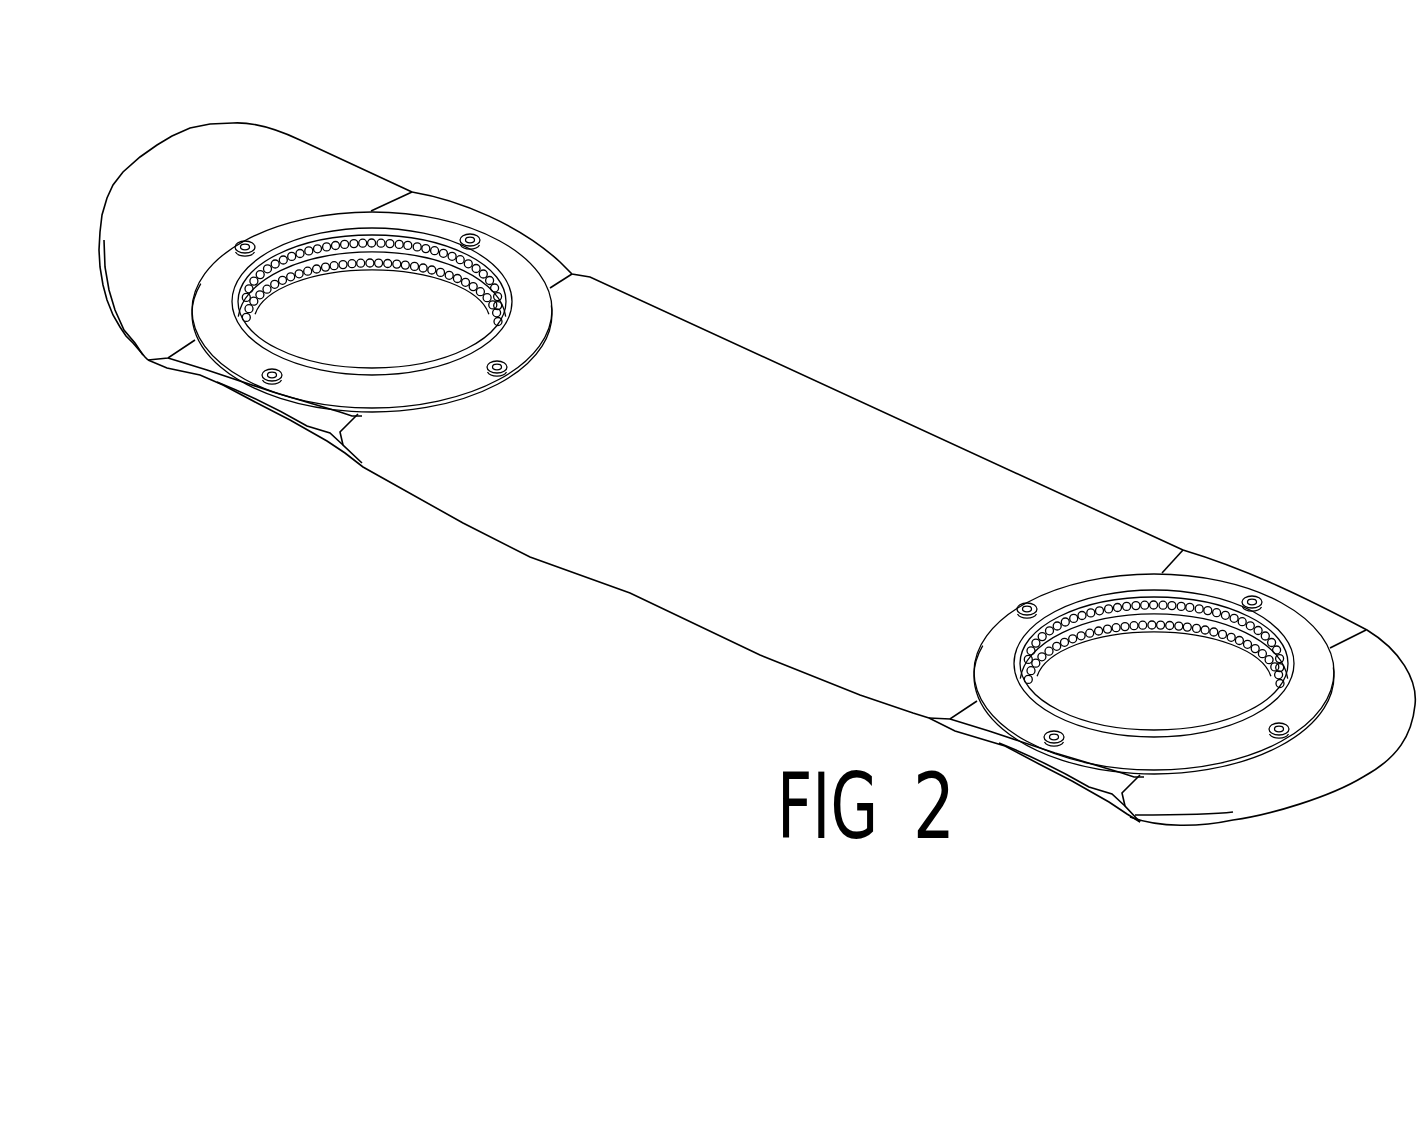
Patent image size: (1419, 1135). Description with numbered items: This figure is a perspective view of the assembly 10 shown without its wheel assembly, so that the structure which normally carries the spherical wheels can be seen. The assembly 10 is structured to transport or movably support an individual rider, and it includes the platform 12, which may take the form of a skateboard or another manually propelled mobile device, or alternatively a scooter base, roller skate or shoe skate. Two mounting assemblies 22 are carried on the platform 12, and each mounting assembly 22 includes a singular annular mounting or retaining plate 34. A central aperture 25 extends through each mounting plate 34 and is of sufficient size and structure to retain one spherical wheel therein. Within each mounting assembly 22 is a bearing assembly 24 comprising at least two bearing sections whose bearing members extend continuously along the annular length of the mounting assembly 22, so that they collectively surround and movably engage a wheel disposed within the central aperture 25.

The assembly 10 is at (848, 317).
The platform 12 is at (934, 423).
The mounting assembly 22 is at (795, 447).
The mounting or retaining plate 34 is at (421, 229).
The bearing assembly 24 is at (408, 283).
The central aperture 25 is at (1172, 465).